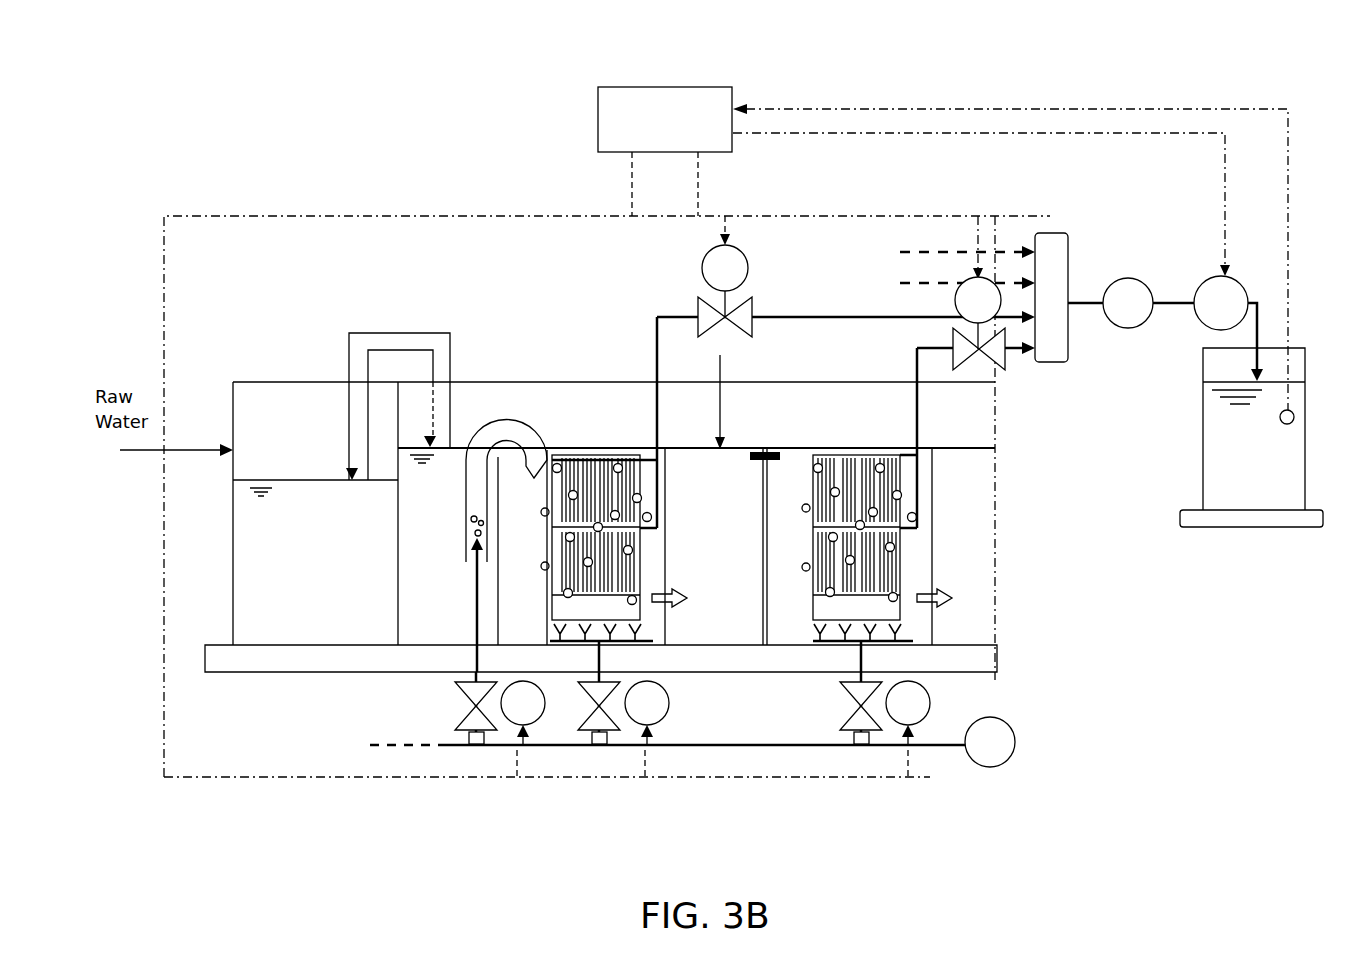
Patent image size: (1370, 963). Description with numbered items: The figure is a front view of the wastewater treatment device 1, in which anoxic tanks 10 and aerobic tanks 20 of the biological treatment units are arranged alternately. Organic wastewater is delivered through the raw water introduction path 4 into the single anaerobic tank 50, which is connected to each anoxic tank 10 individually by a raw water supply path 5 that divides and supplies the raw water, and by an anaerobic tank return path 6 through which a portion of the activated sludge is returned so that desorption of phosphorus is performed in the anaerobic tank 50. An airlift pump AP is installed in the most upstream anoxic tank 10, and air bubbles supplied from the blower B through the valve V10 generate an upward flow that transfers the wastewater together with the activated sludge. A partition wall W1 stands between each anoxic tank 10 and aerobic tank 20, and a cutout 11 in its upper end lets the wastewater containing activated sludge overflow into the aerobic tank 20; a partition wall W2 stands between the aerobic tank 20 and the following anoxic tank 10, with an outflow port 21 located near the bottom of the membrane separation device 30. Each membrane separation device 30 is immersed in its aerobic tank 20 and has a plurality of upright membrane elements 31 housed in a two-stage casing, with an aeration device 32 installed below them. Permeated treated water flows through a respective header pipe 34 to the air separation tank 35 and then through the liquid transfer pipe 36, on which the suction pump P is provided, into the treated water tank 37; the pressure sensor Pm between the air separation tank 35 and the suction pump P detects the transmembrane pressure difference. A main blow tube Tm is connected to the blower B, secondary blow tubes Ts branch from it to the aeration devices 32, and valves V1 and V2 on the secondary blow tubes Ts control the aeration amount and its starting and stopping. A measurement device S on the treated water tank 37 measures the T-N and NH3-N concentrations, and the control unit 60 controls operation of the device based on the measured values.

The wastewater treatment device 1 is at (830, 70).
The raw water introduction path 4 is at (161, 469).
The raw water supply path 5 is at (403, 347).
The anaerobic tank return path 6 is at (360, 328).
The anoxic tank 10 is at (470, 628).
The cutout 11 is at (503, 463).
The aerobic tank 20 is at (743, 548).
The outflow port 21 is at (678, 586).
The membrane separation device 30 is at (643, 546).
The membrane element 31 is at (642, 574).
The aeration device 32 is at (653, 637).
The header pipe 34 is at (805, 315).
The air separation tank 35 is at (1050, 231).
The liquid transfer pipe 36 is at (1252, 292).
The treated water tank 37 is at (1257, 497).
The anaerobic tank 50 is at (322, 617).
The control unit 60 is at (682, 84).
The airlift pump AP is at (512, 414).
The partition wall W1 is at (505, 531).
The partition wall W2 is at (667, 552).
The valve V10 is at (462, 750).
The valve V1 is at (585, 750).
The valve V2 is at (848, 750).
The secondary blow tube Ts is at (487, 747).
The main blow tube Tm is at (752, 750).
The blower B is at (692, 742).
The pressure sensor Pm is at (1131, 303).
The suction pump P is at (1221, 303).
The measurement device S is at (1296, 415).